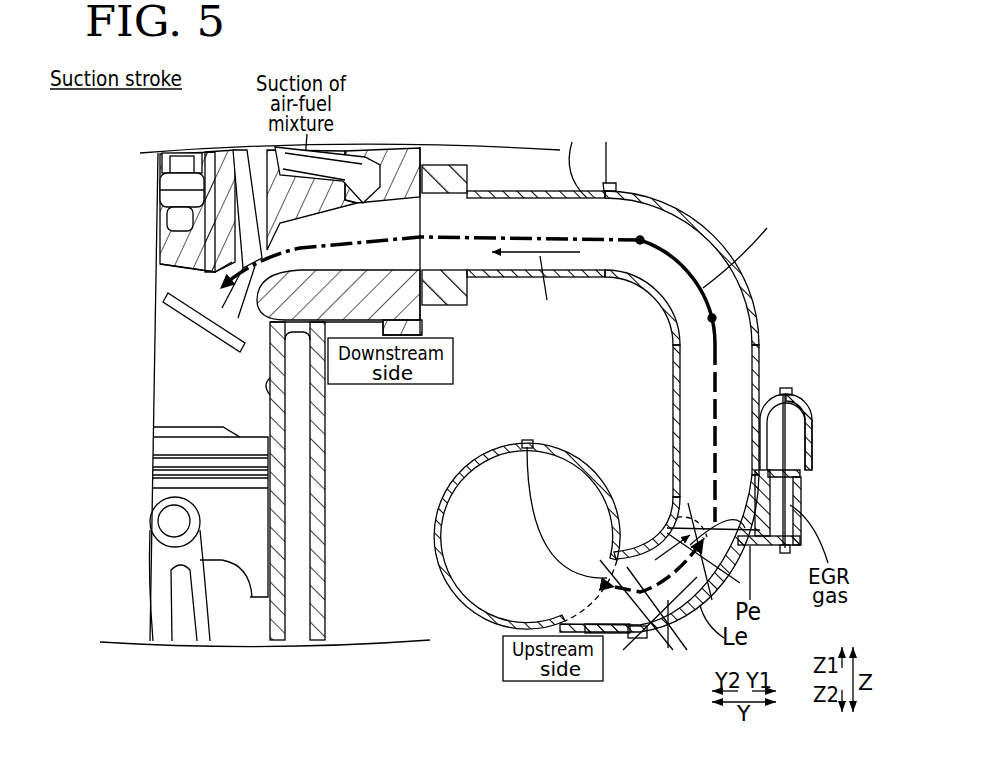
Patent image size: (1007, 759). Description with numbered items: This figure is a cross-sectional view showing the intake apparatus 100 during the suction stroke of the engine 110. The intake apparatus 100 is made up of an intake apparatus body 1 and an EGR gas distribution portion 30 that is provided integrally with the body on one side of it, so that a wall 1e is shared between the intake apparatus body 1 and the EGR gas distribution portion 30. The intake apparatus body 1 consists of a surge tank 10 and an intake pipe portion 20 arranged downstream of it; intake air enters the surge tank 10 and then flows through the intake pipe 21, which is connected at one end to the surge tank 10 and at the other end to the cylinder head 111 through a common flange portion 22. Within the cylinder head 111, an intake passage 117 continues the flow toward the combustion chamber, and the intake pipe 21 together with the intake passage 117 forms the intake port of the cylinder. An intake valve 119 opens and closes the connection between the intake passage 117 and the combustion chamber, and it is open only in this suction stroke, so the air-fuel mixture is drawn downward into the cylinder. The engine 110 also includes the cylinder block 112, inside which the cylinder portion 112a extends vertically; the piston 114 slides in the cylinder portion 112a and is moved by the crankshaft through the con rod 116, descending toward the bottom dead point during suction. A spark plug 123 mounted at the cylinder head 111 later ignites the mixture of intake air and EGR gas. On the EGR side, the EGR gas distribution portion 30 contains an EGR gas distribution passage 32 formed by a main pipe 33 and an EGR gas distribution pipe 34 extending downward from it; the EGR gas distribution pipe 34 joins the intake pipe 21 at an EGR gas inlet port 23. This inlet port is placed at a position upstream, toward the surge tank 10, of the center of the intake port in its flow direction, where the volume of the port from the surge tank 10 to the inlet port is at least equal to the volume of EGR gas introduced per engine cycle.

The intake apparatus 100 is at (853, 124).
The intake apparatus body 1 is at (763, 185).
The engine 110 is at (130, 193).
The cylinder head 111 is at (397, 157).
The cylinder block 112 is at (326, 446).
The cylinder portion 112a is at (272, 382).
The piston 114 is at (160, 484).
The con rod 116 is at (168, 556).
The intake passage 117 is at (420, 157).
The intake valve 119 is at (222, 157).
The spark plug 123 is at (176, 150).
The surge tank 10 is at (483, 620).
The intake pipe portion 20 is at (628, 432).
The intake pipe 21 is at (613, 635).
The flange portion 22 is at (440, 302).
The EGR gas inlet port 23 is at (745, 528).
The EGR gas distribution portion 30 is at (825, 392).
The EGR gas distribution passage 32 is at (783, 598).
The main pipe 33 is at (797, 396).
The EGR gas distribution pipe 34 is at (766, 546).
The wall 1e is at (797, 480).